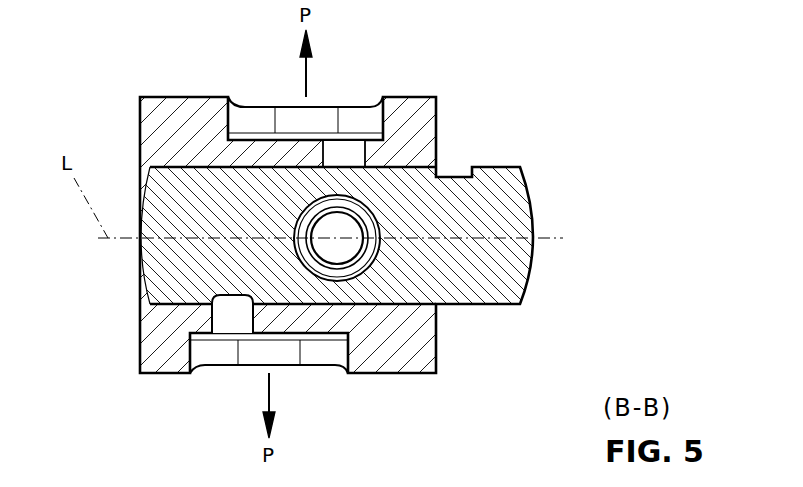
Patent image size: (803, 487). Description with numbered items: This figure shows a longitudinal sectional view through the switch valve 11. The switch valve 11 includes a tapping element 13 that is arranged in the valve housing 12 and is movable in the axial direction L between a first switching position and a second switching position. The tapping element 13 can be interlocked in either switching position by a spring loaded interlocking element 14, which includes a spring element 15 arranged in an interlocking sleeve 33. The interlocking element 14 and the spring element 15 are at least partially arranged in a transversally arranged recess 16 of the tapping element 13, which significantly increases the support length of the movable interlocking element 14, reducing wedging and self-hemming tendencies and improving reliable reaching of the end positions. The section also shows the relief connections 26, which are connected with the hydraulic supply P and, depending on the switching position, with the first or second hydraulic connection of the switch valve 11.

The switch valve 11 is at (419, 221).
The valve housing 12 is at (437, 341).
The tapping element 13 is at (531, 212).
The interlocking element 14 is at (337, 197).
The spring element 15 is at (362, 272).
The recess 16 is at (301, 216).
The relief connection 26 is at (251, 122).
The interlocking sleeve 33 is at (379, 258).